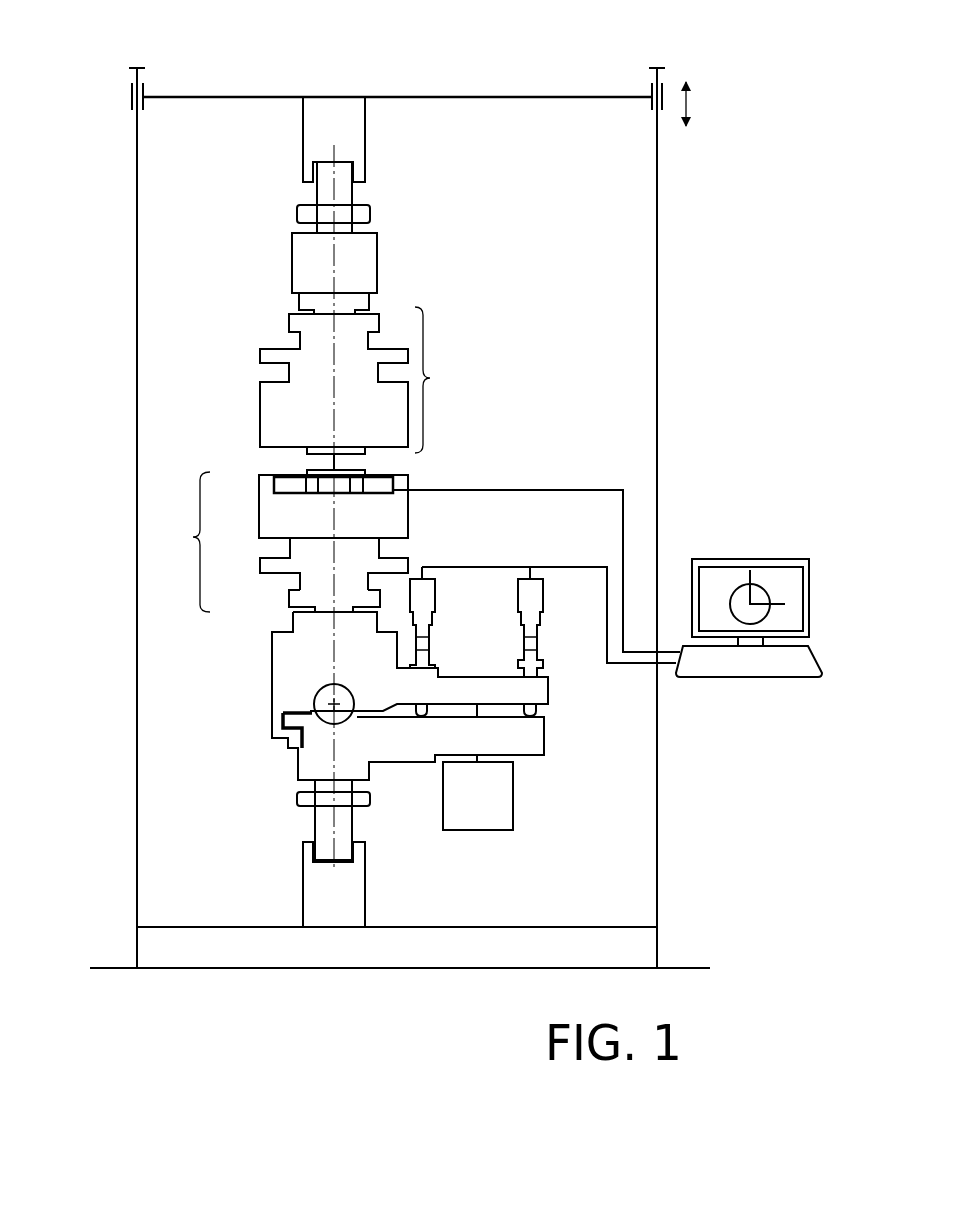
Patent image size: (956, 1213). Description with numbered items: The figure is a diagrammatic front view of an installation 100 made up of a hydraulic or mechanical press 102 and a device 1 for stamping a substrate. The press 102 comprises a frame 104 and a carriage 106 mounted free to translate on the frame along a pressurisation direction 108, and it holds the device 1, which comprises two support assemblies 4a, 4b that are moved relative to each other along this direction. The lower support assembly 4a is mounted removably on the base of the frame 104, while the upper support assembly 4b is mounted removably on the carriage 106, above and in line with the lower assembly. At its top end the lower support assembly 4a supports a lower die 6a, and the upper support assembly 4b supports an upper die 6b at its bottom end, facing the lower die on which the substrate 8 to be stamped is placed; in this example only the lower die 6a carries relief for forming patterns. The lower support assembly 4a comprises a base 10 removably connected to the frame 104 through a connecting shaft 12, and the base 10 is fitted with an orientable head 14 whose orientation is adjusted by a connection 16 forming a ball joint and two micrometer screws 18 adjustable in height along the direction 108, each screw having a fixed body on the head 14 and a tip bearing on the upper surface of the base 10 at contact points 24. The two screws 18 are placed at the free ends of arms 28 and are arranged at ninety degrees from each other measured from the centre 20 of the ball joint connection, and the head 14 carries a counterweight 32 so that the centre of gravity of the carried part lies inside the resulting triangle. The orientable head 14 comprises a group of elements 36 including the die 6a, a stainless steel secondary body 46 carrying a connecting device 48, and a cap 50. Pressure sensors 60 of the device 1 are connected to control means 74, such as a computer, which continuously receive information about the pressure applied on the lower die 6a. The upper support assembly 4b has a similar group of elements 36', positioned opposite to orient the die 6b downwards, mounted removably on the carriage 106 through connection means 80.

The installation 100 is at (429, 67).
The press 102 is at (132, 131).
The frame 104 is at (268, 960).
The carriage 106 is at (216, 96).
The pressurisation direction 108 is at (689, 105).
The device for stamping a substrate 1 is at (483, 162).
The lower support assembly 4a is at (236, 635).
The upper support assembly 4b is at (264, 204).
The lower die 6a is at (318, 471).
The upper die 6b is at (313, 450).
The substrate 8 is at (363, 473).
The base 10 is at (540, 751).
The connecting shaft 12 is at (345, 846).
The orientable head 14 is at (287, 678).
The connection forming a ball joint 16 is at (313, 700).
The micrometer screws 18 is at (430, 596).
The centre of the ball joint connection 20 is at (330, 709).
The contact points 24 is at (422, 716).
The arms 28 is at (470, 683).
The counterweight 32 is at (476, 826).
The group of elements 36 is at (187, 542).
The group of elements 36' is at (363, 380).
The secondary body 46 is at (380, 556).
The connecting device 48 is at (300, 595).
The cap 50 is at (405, 528).
The pressure sensors 60 is at (300, 491).
The control means 74 is at (722, 571).
The connection means 80 is at (378, 256).